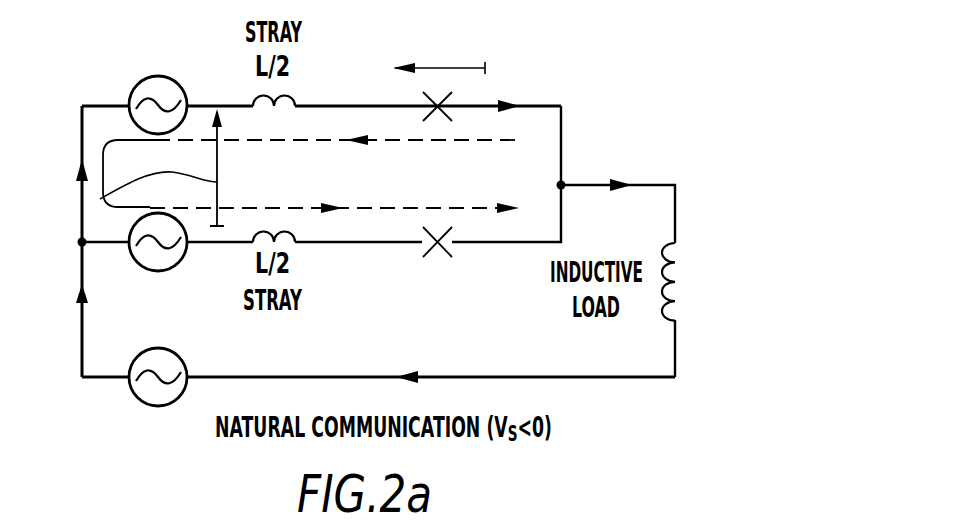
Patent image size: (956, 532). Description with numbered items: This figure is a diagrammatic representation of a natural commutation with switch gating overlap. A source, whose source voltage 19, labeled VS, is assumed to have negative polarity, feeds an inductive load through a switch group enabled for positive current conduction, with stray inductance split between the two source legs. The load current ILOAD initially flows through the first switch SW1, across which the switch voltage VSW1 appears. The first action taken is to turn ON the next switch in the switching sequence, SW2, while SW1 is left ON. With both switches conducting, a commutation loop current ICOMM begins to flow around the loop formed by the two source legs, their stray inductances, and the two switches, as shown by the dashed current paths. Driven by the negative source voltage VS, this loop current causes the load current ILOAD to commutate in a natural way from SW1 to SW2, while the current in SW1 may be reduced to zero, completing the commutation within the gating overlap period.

The source voltage 19 is at (100, 199).
The first switch SW1 is at (460, 115).
The second switch SW2 is at (459, 234).
The commutation loop current ICOMM is at (334, 174).
The load current ILOAD is at (633, 165).
The voltage across SW1 VSW1 is at (439, 51).
The source voltage VS is at (228, 167).